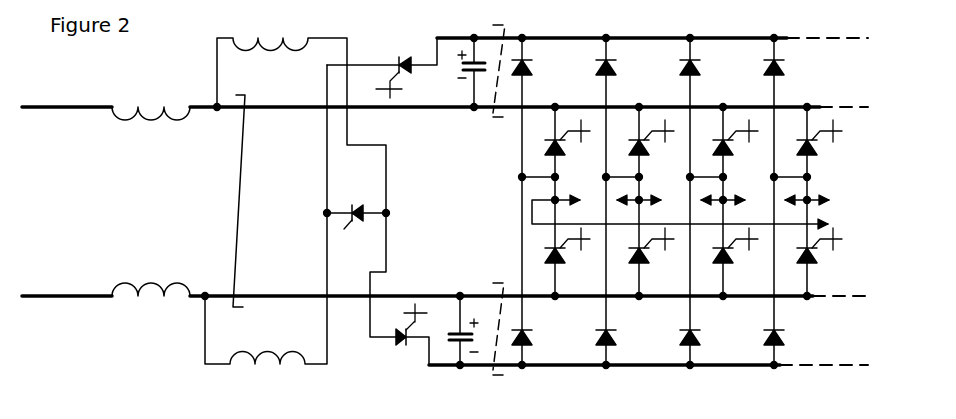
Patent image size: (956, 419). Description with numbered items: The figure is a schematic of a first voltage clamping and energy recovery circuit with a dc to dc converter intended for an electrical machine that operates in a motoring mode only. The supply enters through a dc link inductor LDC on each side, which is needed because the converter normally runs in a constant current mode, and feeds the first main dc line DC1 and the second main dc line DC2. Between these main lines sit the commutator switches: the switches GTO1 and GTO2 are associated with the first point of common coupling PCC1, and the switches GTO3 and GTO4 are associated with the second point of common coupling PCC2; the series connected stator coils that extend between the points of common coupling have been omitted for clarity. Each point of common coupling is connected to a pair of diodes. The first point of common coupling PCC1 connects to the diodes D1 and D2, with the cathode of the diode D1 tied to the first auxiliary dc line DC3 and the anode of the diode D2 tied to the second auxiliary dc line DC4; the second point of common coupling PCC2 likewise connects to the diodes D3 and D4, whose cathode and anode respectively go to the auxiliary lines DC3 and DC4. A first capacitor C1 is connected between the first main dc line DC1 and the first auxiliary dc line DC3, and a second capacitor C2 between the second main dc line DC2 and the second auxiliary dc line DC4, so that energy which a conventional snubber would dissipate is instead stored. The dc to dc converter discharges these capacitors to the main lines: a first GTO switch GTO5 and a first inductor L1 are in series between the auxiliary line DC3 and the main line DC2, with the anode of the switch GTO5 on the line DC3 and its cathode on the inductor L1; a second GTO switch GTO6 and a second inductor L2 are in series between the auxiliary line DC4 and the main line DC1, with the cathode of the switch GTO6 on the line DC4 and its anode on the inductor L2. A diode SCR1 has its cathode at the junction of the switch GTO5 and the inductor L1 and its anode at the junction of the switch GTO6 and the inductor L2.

The dc link inductor LDC is at (151, 203).
The first inductor L1 is at (266, 229).
The second inductor L2 is at (306, 175).
The first main dc line DC1 is at (445, 95).
The second main dc line DC2 is at (445, 309).
The first auxiliary dc line DC3 is at (652, 24).
The second auxiliary dc line DC4 is at (648, 380).
The GTO switch GTO1 is at (563, 202).
The GTO switch GTO2 is at (563, 255).
The GTO switch GTO3 is at (647, 202).
The GTO switch GTO4 is at (647, 255).
The first GTO switch GTO5 is at (382, 64).
The second GTO switch GTO6 is at (392, 340).
The diode SCR1 is at (372, 208).
The first capacitor C1 is at (462, 73).
The second capacitor C2 is at (454, 331).
The diode D1 is at (533, 202).
The diode D2 is at (532, 348).
The diode D3 is at (617, 202).
The diode D4 is at (615, 348).
The first point of common coupling PCC1 is at (563, 192).
The second point of common coupling PCC2 is at (647, 192).